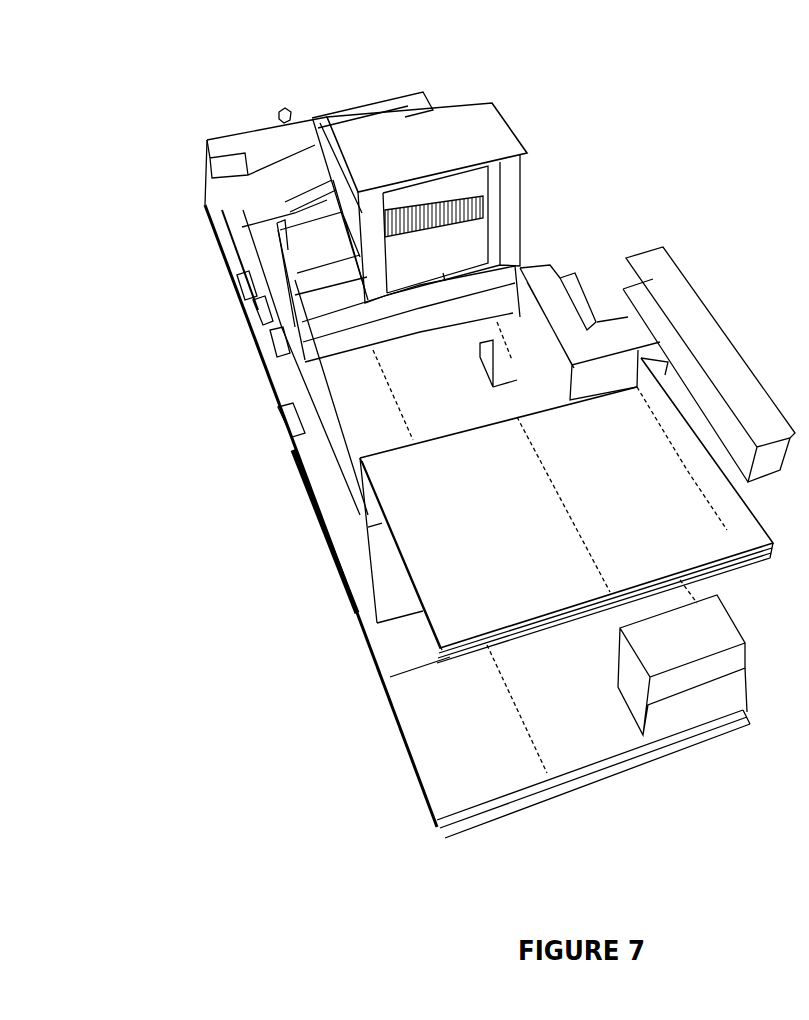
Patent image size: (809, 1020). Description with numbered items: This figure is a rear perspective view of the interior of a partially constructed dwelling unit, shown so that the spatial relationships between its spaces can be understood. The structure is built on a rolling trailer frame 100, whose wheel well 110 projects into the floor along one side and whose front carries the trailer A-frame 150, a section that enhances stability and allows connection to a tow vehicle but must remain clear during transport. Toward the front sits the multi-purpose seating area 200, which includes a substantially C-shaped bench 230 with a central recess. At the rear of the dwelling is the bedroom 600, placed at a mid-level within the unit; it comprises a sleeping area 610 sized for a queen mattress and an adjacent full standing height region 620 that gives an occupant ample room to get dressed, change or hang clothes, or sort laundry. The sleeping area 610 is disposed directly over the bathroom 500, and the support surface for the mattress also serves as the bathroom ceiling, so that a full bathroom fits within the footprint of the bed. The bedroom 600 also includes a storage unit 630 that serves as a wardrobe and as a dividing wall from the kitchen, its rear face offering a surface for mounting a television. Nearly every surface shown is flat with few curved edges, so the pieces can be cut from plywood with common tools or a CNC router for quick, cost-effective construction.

The rolling trailer frame 100 is at (437, 827).
The wheel well 110 is at (313, 503).
The trailer A-frame 150 is at (281, 110).
The multi-purpose seating area 200 is at (275, 137).
The bench 230 is at (302, 189).
The bathroom 500 is at (555, 677).
The bedroom 600 is at (380, 412).
The sleeping area 610 is at (550, 518).
The full standing height region 620 is at (481, 404).
The storage unit 630 is at (465, 258).